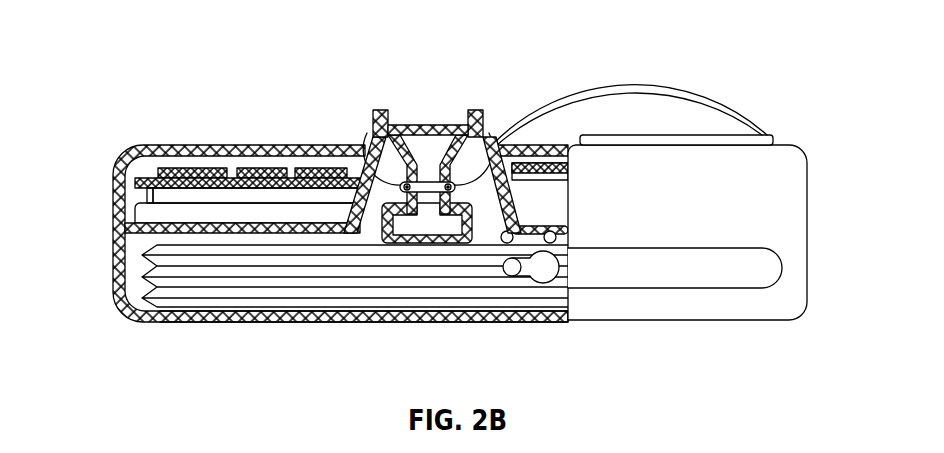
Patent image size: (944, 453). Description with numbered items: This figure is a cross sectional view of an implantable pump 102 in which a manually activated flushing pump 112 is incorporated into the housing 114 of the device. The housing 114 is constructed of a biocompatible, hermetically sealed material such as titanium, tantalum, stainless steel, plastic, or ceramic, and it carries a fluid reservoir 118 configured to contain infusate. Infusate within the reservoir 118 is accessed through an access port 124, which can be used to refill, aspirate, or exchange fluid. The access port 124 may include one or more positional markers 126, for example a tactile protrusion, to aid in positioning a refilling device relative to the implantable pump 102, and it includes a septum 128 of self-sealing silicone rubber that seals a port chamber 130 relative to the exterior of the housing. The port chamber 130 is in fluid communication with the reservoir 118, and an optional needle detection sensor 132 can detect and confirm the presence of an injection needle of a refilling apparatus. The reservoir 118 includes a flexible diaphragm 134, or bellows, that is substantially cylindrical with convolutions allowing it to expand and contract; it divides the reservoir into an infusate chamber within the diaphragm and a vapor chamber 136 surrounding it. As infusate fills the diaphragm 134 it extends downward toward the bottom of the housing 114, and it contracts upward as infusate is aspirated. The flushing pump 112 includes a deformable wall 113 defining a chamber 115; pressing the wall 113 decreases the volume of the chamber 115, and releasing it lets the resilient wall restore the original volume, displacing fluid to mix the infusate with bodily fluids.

The implantable pump 102 is at (122, 48).
The manually activated flushing pump 112 is at (672, 85).
The deformable wall 113 is at (730, 108).
The housing 114 is at (190, 145).
The chamber 115 is at (637, 108).
The fluid reservoir 118 is at (135, 285).
The access port 124 is at (437, 125).
The positional marker 126 is at (383, 110).
The septum 128 is at (362, 145).
The port chamber 130 is at (423, 223).
The needle detection sensor 132 is at (493, 145).
The flexible diaphragm 134 is at (335, 290).
The vapor chamber 136 is at (183, 233).